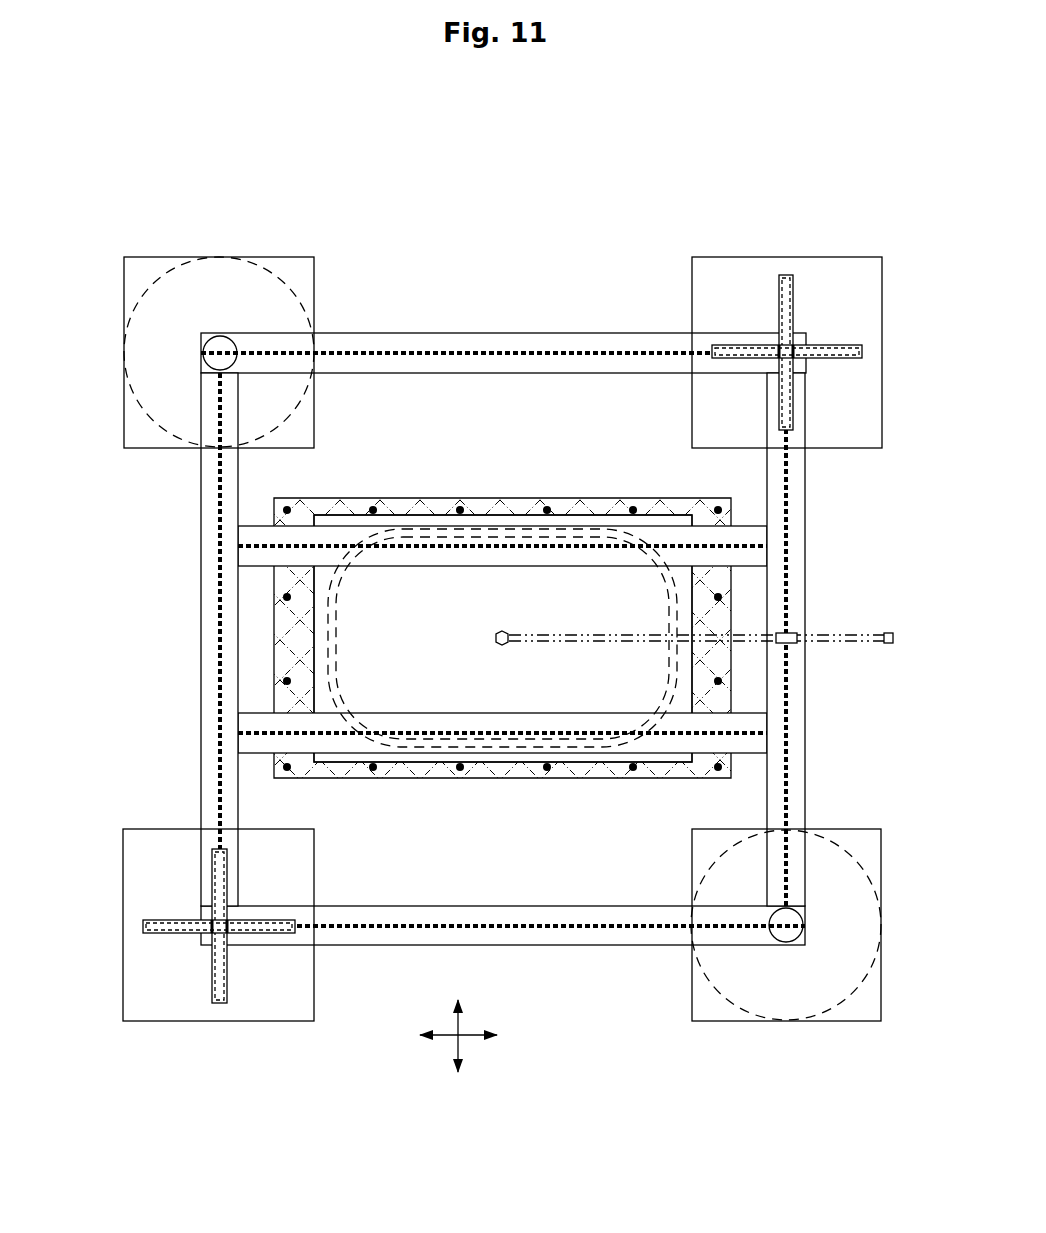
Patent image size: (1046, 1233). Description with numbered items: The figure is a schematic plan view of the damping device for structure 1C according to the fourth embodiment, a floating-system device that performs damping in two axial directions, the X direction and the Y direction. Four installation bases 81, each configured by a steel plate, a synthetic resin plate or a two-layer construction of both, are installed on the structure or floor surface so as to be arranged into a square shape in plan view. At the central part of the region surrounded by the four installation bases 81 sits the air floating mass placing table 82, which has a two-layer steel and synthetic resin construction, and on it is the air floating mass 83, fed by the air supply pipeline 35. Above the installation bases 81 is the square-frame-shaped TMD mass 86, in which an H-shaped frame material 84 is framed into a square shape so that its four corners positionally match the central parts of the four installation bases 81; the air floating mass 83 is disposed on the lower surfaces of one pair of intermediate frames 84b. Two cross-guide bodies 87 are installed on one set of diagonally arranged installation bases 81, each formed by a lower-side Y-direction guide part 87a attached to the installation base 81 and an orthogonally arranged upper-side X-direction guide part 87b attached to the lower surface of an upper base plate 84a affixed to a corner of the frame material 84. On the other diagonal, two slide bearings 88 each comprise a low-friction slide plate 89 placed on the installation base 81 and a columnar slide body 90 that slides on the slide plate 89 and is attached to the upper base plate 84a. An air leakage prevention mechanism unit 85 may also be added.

The damping device for structure 1C is at (619, 294).
The air supply pipeline 35 is at (848, 645).
The installation base 81 is at (504, 632).
The air floating mass placing table 82 is at (732, 608).
The air floating mass 83 is at (352, 520).
The H-shaped frame material 84 is at (200, 493).
The upper base plate 84a is at (283, 270).
The intermediate frame 84b is at (255, 723).
The air leakage prevention mechanism unit 85 is at (325, 640).
The TMD mass 86 is at (462, 332).
The cross-guide body 87 is at (504, 673).
The Y-direction guide part 87a is at (222, 873).
The X-direction guide part 87b is at (263, 945).
The slide bearing 88 is at (124, 351).
The slide plate 89 is at (163, 397).
The columnar slide body 90 is at (225, 345).